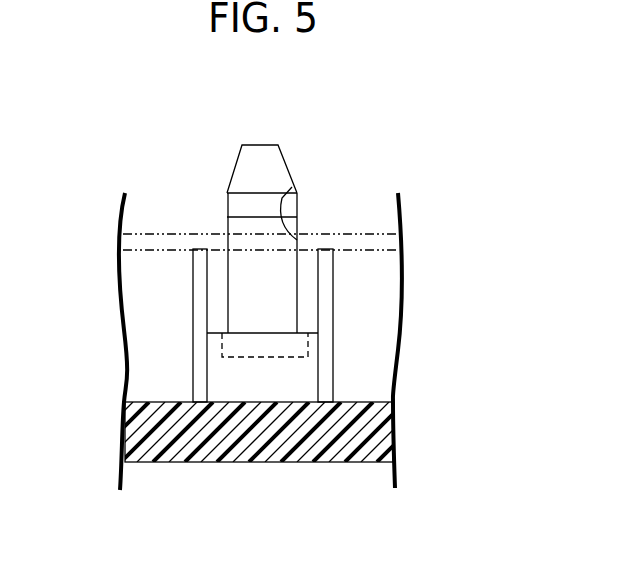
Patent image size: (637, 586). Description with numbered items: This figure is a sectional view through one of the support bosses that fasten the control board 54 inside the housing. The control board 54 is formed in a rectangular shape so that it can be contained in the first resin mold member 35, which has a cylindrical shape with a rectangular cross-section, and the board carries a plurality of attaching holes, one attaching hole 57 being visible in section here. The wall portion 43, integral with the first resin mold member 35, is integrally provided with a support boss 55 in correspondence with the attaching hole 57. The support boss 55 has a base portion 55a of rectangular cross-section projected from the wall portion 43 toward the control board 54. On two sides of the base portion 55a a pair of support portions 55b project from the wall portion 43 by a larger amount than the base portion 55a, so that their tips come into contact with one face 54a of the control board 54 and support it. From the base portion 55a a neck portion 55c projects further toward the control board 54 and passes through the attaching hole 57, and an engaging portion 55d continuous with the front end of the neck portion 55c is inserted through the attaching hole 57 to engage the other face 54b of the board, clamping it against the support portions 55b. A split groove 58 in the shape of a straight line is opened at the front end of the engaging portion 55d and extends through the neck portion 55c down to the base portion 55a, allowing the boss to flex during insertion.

The first resin mold member 35 is at (241, 472).
The wall portion 43 is at (185, 462).
The control board 54 is at (123, 237).
The one face of the control board 54a is at (340, 250).
The other face of the control board 54b is at (340, 232).
The support boss 55 is at (335, 360).
The base portion 55a is at (297, 377).
The support portion 55b is at (197, 316).
The neck portion 55c is at (243, 277).
The engaging portion 55d is at (240, 172).
The attaching hole 57 is at (292, 187).
The split groove 58 is at (247, 349).